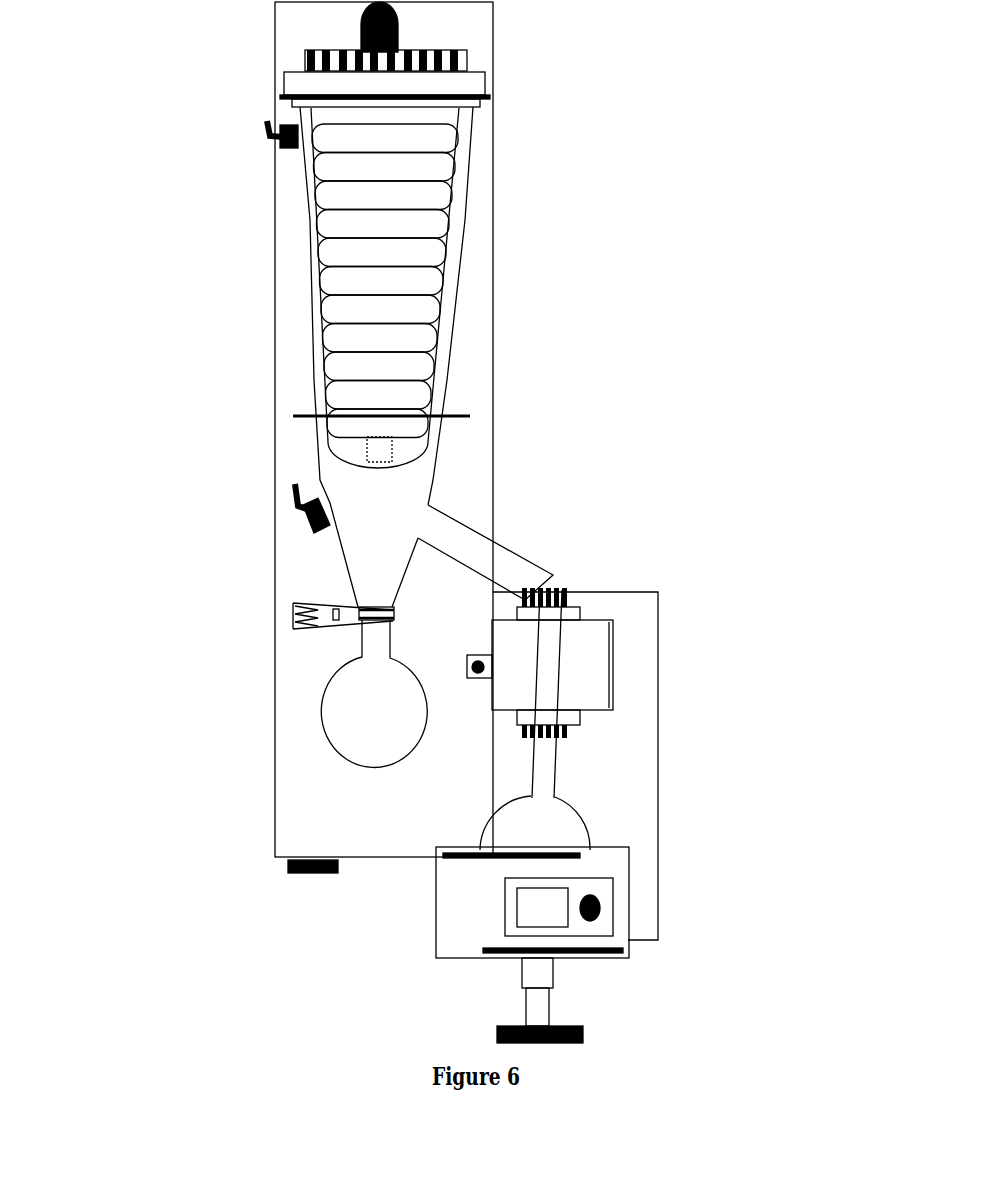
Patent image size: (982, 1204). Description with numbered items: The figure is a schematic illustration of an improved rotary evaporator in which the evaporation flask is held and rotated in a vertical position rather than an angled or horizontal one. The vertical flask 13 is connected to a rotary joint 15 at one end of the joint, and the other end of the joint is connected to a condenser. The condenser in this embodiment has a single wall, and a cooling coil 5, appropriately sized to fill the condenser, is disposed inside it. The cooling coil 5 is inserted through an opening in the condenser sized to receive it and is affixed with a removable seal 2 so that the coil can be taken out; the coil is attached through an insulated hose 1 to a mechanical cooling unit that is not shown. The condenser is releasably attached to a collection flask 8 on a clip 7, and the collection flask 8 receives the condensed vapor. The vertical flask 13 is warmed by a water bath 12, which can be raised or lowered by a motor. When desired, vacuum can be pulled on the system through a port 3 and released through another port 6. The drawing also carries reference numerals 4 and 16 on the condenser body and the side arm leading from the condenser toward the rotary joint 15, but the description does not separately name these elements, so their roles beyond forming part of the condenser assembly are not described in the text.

The insulated hose 1 is at (236, 30).
The removable seal 2 is at (233, 96).
The port 3 is at (240, 151).
The column outer wall 4 is at (285, 302).
The cooling coil 5 is at (326, 380).
The port 6 is at (248, 520).
The clip 7 is at (258, 638).
The collection flask 8 is at (292, 776).
The side arm 16 is at (543, 539).
The rotary joint 15 is at (638, 658).
The vertical flask 13 is at (614, 815).
The water bath 12 is at (649, 895).